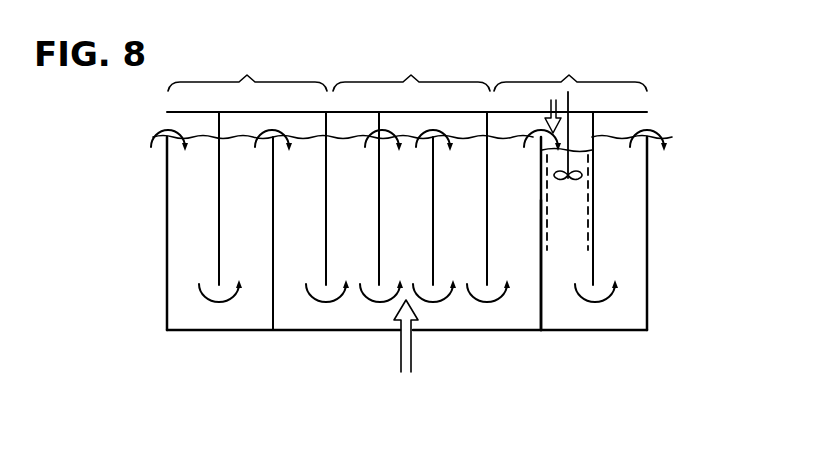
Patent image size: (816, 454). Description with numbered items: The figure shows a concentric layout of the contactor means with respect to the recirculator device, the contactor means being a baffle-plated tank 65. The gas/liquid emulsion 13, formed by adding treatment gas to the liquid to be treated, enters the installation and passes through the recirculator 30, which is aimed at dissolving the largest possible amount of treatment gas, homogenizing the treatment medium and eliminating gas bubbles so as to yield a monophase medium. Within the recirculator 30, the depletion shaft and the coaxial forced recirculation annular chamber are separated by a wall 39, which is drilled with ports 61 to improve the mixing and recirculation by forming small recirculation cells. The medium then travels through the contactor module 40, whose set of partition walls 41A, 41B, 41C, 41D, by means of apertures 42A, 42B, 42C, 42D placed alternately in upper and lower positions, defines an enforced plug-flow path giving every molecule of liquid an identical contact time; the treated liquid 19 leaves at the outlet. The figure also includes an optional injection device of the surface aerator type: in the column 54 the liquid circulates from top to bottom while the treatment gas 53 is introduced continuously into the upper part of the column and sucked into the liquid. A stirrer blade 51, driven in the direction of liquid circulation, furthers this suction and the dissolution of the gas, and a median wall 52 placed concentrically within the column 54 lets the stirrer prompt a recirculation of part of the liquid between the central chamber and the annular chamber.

The gas/liquid emulsion 13 is at (400, 360).
The treated liquid 19 is at (659, 128).
The recirculator 30 is at (406, 176).
The wall 39 is at (433, 202).
The contactor module 40 is at (407, 71).
The partition wall 41A is at (219, 237).
The partition wall 41B is at (273, 237).
The partition wall 41C is at (541, 229).
The partition wall 41D is at (594, 236).
The aperture 42A is at (240, 320).
The aperture 42B is at (293, 125).
The aperture 42C is at (530, 127).
The aperture 42D is at (577, 318).
The stirrer blade 51 is at (570, 131).
The median wall 52 is at (595, 202).
The treatment gas 53 is at (550, 107).
The column 54 is at (590, 252).
The ports 61 is at (433, 257).
The baffle-plated tank 65 is at (180, 262).